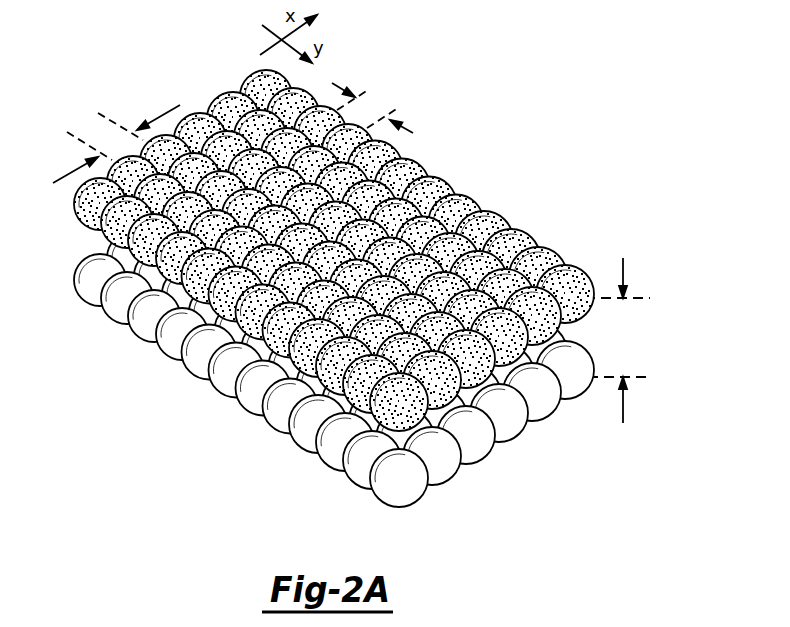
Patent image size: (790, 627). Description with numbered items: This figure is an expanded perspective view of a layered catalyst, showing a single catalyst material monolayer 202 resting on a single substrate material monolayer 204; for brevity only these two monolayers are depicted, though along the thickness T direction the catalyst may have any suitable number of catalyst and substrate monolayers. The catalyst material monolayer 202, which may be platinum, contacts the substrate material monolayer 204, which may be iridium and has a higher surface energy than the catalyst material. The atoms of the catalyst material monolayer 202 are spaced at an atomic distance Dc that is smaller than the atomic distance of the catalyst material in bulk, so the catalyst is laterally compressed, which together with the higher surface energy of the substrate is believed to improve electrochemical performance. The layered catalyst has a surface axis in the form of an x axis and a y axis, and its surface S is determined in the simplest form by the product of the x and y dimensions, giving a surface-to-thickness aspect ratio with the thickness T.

The catalyst material monolayer 202 is at (379, 250).
The substrate material monolayer 204 is at (569, 414).
The surface S is at (508, 249).
The atomic distance Dc is at (233, 133).
The thickness T is at (611, 340).